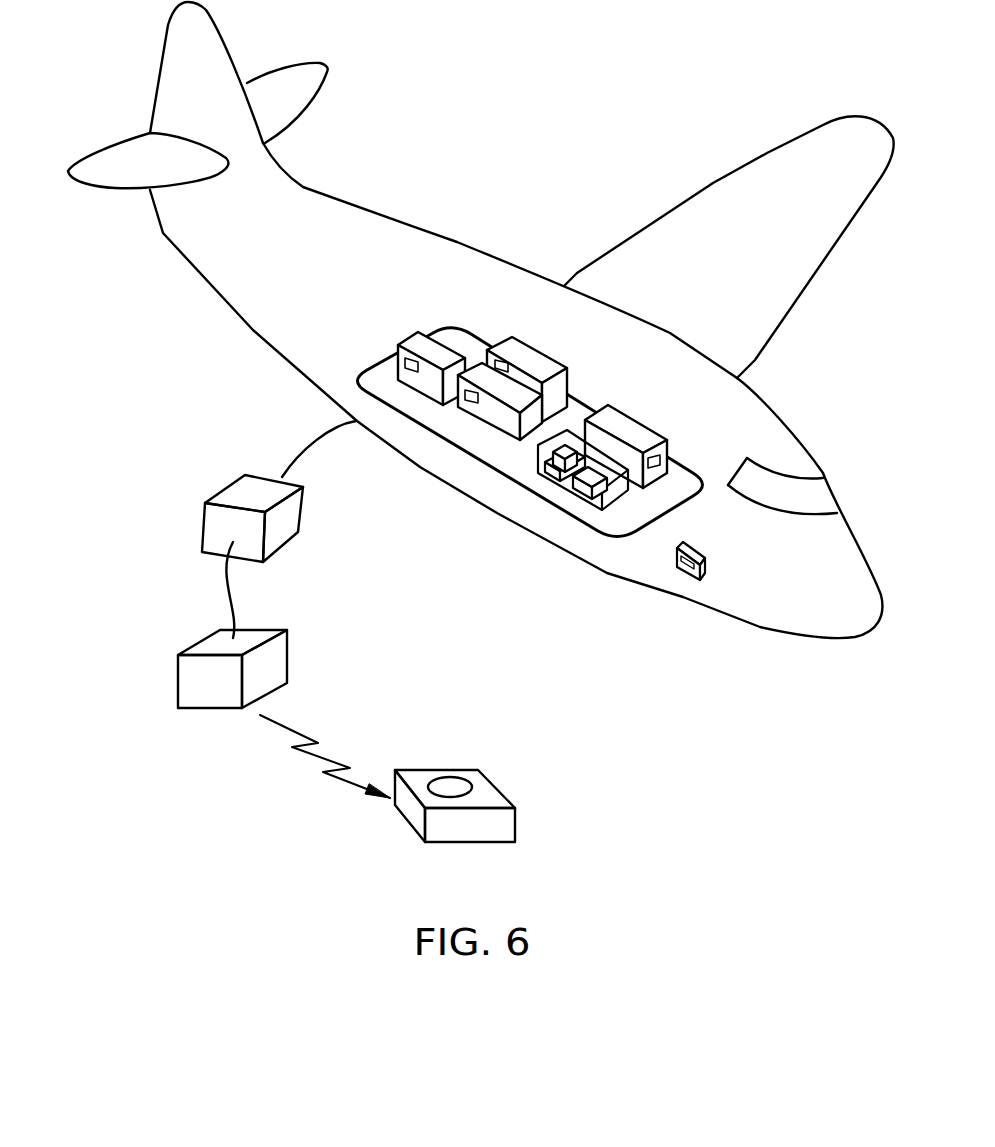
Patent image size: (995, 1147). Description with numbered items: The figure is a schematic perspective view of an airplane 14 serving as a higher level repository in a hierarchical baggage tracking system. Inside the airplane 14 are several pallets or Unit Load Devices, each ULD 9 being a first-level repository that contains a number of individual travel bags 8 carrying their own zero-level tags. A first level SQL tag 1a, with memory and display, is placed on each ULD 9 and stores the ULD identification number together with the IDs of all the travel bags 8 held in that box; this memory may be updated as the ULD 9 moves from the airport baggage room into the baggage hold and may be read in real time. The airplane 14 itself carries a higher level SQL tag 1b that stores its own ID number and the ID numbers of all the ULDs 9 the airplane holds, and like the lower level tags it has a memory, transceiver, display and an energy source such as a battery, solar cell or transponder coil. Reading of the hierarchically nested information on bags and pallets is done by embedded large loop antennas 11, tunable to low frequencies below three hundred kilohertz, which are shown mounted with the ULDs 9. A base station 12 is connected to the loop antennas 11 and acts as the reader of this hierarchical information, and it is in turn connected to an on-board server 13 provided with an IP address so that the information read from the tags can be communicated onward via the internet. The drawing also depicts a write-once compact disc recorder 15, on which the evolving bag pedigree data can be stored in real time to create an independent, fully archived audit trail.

The first level SQL tag 1a is at (398, 376).
The higher level SQL tag 1b is at (687, 573).
The travel bags 8 is at (578, 485).
The ULD 9 is at (530, 358).
The loop antennas 11 is at (587, 520).
The base station 12 is at (215, 493).
The server 13 is at (177, 678).
The airplane 14 is at (767, 630).
The RO-CD recorder 15 is at (517, 825).